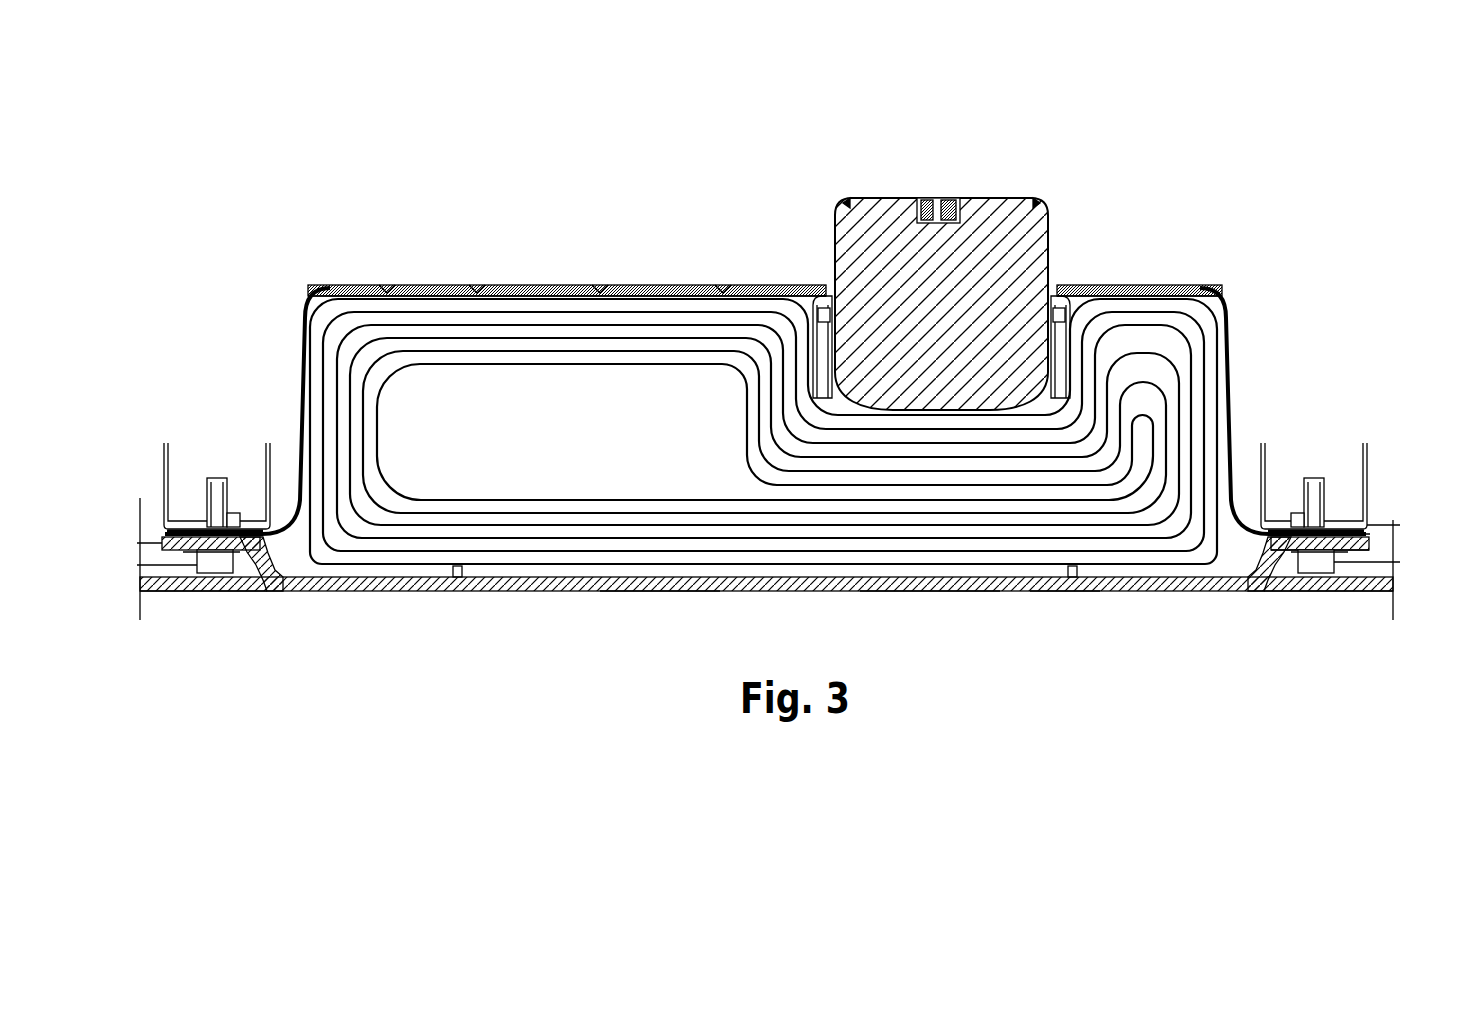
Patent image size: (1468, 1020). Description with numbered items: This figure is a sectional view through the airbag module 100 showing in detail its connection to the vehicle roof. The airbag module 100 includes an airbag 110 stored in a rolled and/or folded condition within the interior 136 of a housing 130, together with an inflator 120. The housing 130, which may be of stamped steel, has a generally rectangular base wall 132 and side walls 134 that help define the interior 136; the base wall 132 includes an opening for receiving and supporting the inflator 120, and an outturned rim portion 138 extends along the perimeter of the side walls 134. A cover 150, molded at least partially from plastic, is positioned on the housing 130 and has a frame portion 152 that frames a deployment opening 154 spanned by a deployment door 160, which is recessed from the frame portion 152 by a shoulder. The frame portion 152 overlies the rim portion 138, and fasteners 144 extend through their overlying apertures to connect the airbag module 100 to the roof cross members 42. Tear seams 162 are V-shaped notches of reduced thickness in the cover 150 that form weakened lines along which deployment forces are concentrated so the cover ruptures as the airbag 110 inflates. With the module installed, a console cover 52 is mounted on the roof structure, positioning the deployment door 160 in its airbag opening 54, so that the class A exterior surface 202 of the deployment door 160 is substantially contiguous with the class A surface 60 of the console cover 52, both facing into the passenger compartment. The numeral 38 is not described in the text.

The airbag module 100 is at (401, 203).
The airbag 110 is at (588, 338).
The inflator 120 is at (878, 245).
The housing 130 is at (357, 284).
The base wall 132 is at (670, 290).
The side walls 134 is at (298, 402).
The interior 136 is at (477, 497).
The rim portion 138 is at (808, 262).
The fasteners 144 is at (215, 495).
The roof cross members 42 is at (266, 455).
The bracket flange 38 is at (1372, 529).
The frame portion 152 is at (1370, 560).
The console cover 52 is at (182, 555).
The class A surface 60 is at (212, 603).
The tear seams 162 is at (300, 570).
The cover 150 is at (500, 592).
The deployment door 160 is at (655, 585).
The deployment opening 154 is at (898, 655).
The exterior surface 202 is at (968, 617).
The airbag opening 54 is at (1066, 648).